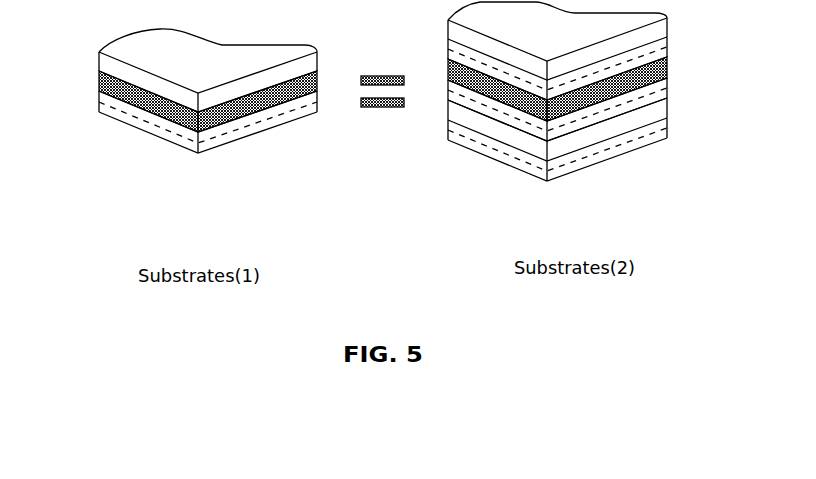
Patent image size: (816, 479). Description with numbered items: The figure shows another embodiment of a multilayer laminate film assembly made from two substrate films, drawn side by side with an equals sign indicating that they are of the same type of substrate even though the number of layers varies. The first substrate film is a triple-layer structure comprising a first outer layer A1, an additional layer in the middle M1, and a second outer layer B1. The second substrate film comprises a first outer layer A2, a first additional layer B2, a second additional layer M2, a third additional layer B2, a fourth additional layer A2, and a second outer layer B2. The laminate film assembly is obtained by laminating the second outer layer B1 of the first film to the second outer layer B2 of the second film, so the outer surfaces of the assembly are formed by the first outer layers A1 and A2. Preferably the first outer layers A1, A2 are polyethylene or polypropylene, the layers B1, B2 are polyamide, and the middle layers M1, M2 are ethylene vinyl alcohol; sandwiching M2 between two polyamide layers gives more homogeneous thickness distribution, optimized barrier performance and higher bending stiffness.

The first outer layer of the first substrate film A1 is at (191, 70).
The additional middle layer of the first substrate film M1 is at (191, 101).
The second outer layer of the first substrate film B1 is at (191, 122).
The first outer layer of the second substrate film A2 is at (572, 81).
The second outer layer of the second substrate film B2 is at (572, 109).
The second additional layer of the second substrate film M2 is at (574, 89).